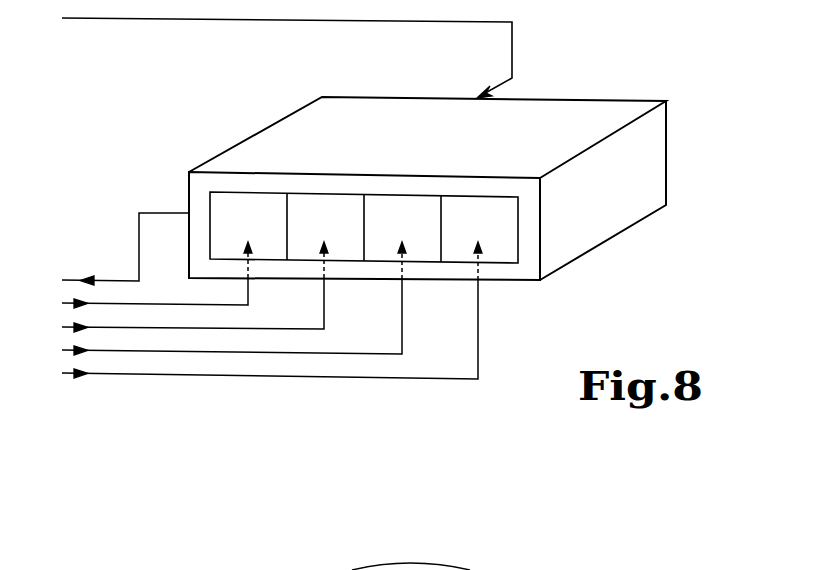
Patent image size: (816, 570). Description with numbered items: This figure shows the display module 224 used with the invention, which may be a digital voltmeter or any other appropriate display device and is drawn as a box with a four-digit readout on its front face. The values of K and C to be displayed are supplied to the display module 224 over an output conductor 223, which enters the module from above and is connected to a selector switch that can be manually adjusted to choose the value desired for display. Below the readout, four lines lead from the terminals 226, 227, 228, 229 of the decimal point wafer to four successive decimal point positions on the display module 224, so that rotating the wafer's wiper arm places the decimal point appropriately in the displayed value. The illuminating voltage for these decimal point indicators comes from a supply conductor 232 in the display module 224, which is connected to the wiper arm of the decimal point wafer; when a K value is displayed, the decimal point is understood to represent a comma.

The output conductor 223 is at (313, 22).
The display module 224 is at (666, 163).
The terminal 226 is at (163, 303).
The terminal 227 is at (268, 329).
The terminal 228 is at (335, 354).
The terminal 229 is at (410, 379).
The supply conductor 232 is at (139, 240).